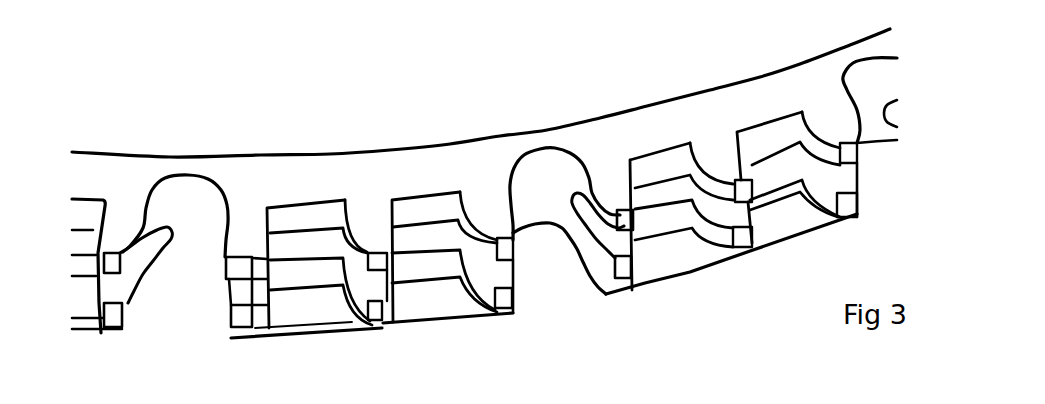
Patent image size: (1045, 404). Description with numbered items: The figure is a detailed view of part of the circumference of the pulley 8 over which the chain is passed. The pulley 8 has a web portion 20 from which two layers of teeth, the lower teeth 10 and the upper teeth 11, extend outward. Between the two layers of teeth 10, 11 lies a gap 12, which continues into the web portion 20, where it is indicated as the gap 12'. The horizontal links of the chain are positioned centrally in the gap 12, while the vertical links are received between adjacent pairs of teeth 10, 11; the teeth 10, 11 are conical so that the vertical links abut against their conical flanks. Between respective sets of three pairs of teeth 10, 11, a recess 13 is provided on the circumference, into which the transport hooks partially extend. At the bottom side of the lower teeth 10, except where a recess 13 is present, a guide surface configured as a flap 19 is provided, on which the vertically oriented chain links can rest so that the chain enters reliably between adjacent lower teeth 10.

The pulley 8 is at (534, 68).
The lower teeth 10 is at (246, 306).
The upper teeth 11 is at (240, 238).
The gap 12 is at (200, 314).
The gap in web portion 12' is at (627, 150).
The recess 13 is at (551, 252).
The flap 19 is at (413, 303).
The web portion 20 is at (483, 163).